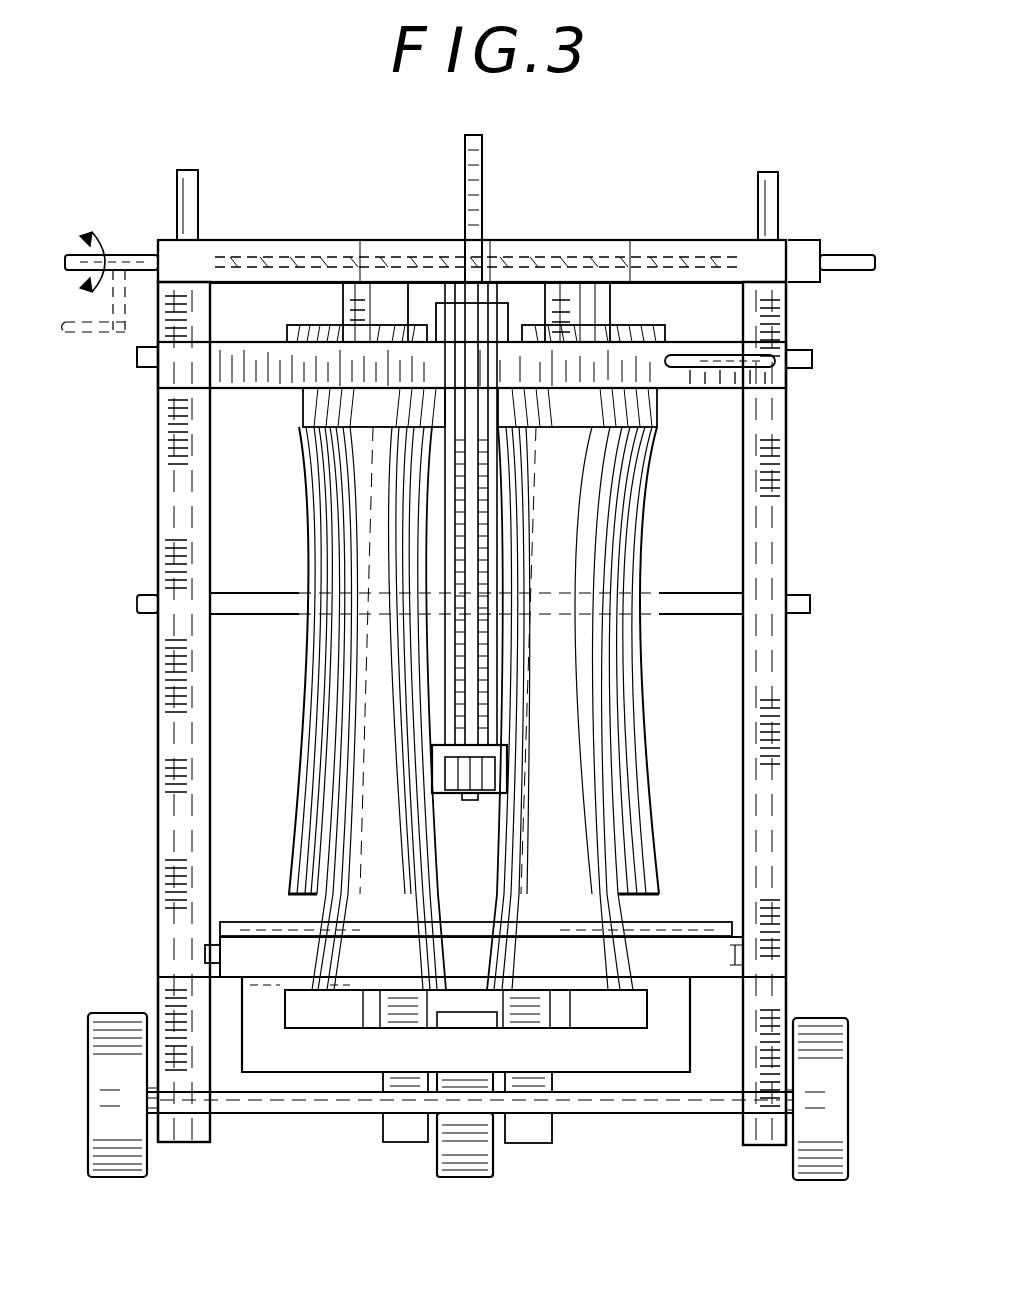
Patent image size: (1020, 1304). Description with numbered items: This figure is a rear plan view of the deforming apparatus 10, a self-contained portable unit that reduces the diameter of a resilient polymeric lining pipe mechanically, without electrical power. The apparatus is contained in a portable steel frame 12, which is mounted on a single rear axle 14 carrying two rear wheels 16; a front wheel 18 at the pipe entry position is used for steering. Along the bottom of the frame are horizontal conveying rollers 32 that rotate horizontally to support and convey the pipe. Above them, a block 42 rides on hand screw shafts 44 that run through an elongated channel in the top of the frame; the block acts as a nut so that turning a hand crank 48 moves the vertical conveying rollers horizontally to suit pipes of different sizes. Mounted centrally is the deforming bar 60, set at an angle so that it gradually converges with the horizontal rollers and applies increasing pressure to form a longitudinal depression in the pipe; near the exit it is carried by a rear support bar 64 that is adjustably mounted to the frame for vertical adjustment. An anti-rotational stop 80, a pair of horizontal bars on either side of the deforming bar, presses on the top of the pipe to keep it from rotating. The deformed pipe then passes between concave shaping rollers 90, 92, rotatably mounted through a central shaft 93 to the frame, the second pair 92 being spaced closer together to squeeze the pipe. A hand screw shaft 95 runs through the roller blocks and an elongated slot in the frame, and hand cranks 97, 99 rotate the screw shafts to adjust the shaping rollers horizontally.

The deforming apparatus 10 is at (803, 704).
The portable steel frame 12 is at (768, 843).
The rear axle 14 is at (718, 1097).
The rear wheels 16 is at (830, 1081).
The front wheel 18 is at (445, 1150).
The horizontal conveying rollers 32 is at (686, 922).
The block 42 is at (565, 246).
The hand screw shafts 44 is at (687, 262).
The hand crank 48 is at (108, 257).
The deforming bar 60 is at (447, 795).
The rear support bar 64 is at (479, 188).
The anti-rotational stop 80 is at (697, 602).
The first pair of shaping rollers 90 is at (633, 408).
The second pair of shaping rollers 92 is at (587, 985).
The central shaft 93 is at (382, 405).
The hand screw shaft 95 is at (641, 362).
The hand crank 97 is at (770, 391).
The hand crank 99 is at (805, 350).